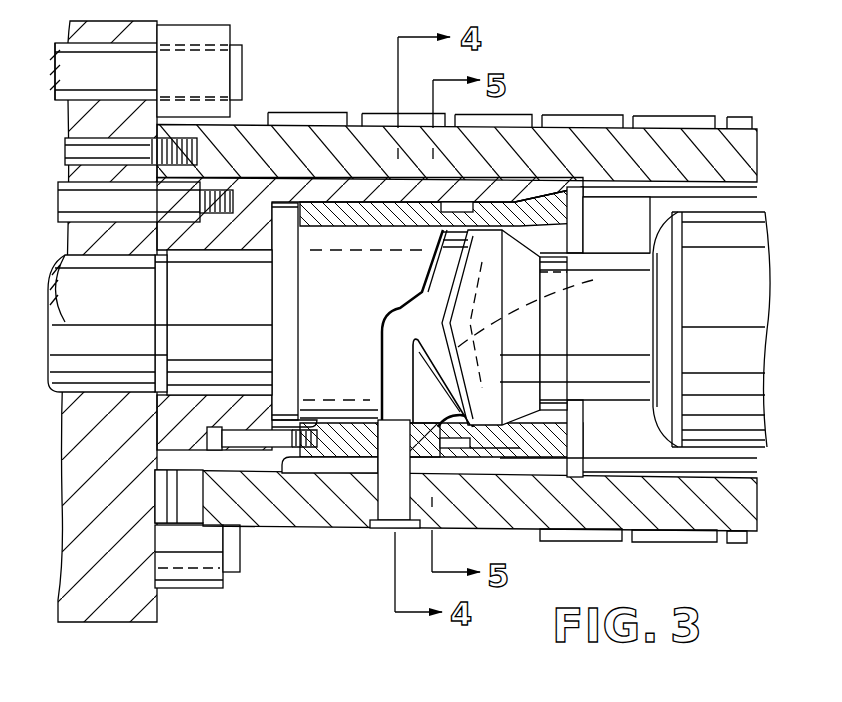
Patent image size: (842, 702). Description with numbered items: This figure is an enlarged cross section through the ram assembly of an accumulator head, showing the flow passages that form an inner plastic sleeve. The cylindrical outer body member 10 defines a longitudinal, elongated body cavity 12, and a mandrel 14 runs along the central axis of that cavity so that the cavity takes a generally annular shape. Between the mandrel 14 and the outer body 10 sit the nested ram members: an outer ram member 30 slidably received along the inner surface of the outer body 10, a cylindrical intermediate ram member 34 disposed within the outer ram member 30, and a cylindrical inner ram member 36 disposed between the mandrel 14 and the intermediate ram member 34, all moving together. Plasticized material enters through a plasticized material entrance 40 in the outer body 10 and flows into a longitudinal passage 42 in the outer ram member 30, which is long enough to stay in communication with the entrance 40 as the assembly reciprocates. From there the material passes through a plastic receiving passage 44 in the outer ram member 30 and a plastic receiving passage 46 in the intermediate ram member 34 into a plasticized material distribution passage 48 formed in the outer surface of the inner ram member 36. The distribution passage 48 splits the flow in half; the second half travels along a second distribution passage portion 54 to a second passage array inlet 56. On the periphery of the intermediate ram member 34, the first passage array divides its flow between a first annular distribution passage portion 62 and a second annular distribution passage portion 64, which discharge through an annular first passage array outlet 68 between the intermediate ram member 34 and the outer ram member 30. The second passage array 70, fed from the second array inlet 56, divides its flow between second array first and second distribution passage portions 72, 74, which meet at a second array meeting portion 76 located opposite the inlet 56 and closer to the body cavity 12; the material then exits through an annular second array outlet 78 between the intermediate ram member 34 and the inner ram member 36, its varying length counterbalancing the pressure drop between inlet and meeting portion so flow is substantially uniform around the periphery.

The outer body member 10 is at (662, 150).
The body cavity 12 is at (616, 225).
The mandrel 14 is at (616, 337).
The outer ram member 30 is at (500, 205).
The intermediate ram member 34 is at (525, 218).
The inner ram member 36 is at (331, 304).
The plasticized material entrance 40 is at (377, 503).
The longitudinal passage 42 is at (303, 500).
The plastic receiving passage 44 is at (390, 486).
The plastic receiving passage 46 is at (398, 437).
The plasticized material distribution passage 48 is at (418, 413).
The second distribution passage portion 54 is at (398, 367).
The second passage array inlet 56 is at (418, 322).
The first annular distribution passage portion 62 is at (452, 447).
The second annular distribution passage portion 64 is at (458, 205).
The first passage array outlet 68 is at (540, 447).
The second passage array 70 is at (445, 290).
The second array first distribution passage portion 72 is at (525, 477).
The second array second distribution passage portion 74 is at (447, 246).
The second array meeting portion 76 is at (578, 275).
The second array outlet 78 is at (528, 417).